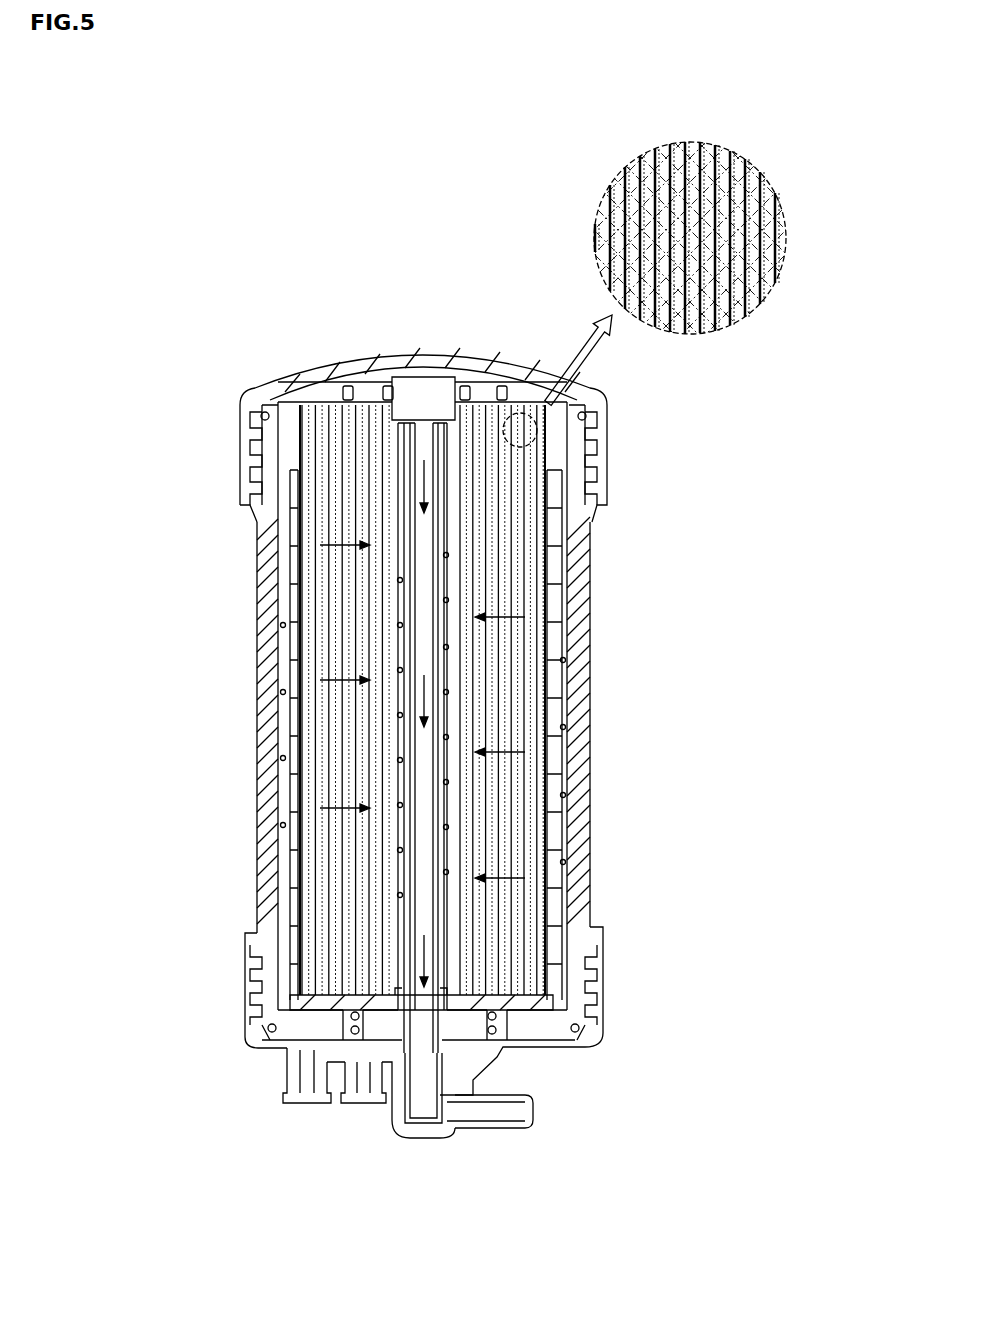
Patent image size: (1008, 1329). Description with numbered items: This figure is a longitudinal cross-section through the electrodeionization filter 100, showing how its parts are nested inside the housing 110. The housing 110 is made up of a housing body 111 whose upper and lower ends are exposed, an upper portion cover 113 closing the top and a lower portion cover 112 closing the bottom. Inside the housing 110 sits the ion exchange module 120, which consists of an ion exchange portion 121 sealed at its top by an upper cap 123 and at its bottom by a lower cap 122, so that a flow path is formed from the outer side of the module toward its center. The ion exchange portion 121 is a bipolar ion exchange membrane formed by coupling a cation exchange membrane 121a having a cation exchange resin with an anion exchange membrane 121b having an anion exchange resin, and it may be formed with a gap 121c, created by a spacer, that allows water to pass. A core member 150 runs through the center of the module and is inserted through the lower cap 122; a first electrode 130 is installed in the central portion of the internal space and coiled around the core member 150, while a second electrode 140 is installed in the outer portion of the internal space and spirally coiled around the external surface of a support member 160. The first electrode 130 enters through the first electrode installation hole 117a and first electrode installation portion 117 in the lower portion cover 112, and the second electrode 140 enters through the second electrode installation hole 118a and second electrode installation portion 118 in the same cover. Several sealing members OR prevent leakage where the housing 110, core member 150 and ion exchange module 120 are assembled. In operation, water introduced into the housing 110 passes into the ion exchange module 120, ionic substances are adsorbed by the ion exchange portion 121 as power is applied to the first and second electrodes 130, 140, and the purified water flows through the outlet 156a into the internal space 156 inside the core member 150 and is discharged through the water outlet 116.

The electrodeionization filter 100 is at (204, 241).
The housing 110 is at (602, 548).
The housing body 111 is at (262, 712).
The lower portion cover 112 is at (260, 1040).
The upper portion cover 113 is at (252, 395).
The water outlet 116 is at (517, 1112).
The first electrode installation portion 117 is at (357, 1105).
The first electrode installation hole 117a is at (330, 1080).
The second electrode installation portion 118 is at (303, 1100).
The second electrode installation hole 118a is at (296, 1050).
The ion exchange module 120 is at (496, 838).
The ion exchange portion 121 is at (510, 638).
The cation exchange membrane 121a is at (710, 148).
The anion exchange membrane 121b is at (727, 157).
The gap 121c is at (737, 262).
The lower cap 122 is at (590, 997).
The upper cap 123 is at (320, 388).
The first electrode 130 is at (398, 578).
The second electrode 140 is at (290, 822).
The core member 150 is at (557, 898).
The internal space 156 is at (440, 935).
The outlet 156a is at (424, 1060).
The support member 160 is at (560, 590).
The sealing member OR is at (590, 418).